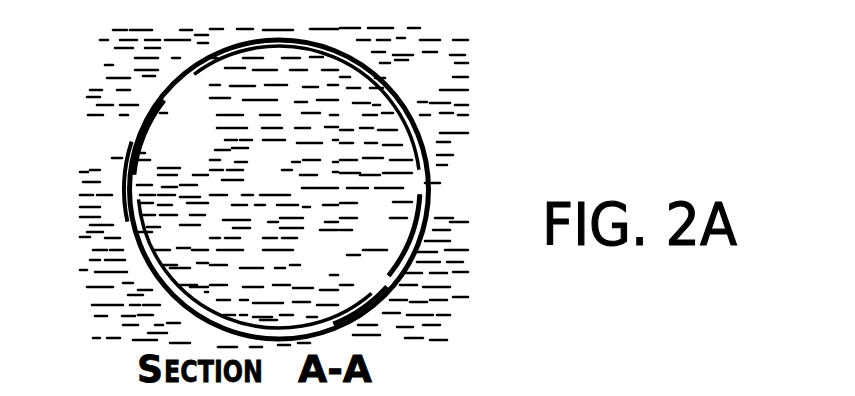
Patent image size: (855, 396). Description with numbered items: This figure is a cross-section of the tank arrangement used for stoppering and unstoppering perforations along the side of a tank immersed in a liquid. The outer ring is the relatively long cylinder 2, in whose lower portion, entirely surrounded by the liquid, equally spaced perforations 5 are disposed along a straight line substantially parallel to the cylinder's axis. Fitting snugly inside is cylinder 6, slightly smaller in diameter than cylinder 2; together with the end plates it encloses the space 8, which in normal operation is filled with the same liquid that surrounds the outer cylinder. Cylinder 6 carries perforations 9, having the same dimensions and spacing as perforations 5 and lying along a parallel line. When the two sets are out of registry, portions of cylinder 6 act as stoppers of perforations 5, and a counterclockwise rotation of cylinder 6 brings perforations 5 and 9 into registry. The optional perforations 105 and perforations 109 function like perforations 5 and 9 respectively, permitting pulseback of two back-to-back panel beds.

The cylinder 2 is at (397, 82).
The perforations 5 is at (430, 195).
The cylinder 6 is at (402, 249).
The space 8 is at (274, 187).
The perforations 9 is at (373, 288).
The perforations 105 is at (120, 192).
The perforations 109 is at (177, 88).